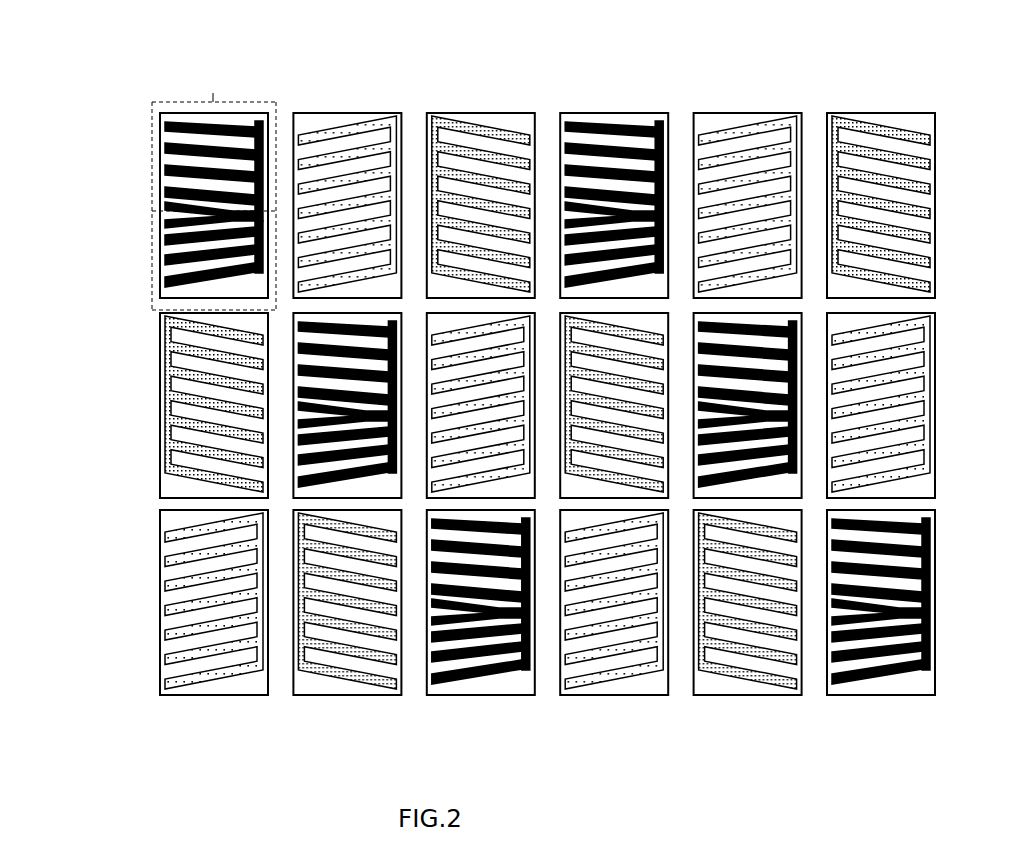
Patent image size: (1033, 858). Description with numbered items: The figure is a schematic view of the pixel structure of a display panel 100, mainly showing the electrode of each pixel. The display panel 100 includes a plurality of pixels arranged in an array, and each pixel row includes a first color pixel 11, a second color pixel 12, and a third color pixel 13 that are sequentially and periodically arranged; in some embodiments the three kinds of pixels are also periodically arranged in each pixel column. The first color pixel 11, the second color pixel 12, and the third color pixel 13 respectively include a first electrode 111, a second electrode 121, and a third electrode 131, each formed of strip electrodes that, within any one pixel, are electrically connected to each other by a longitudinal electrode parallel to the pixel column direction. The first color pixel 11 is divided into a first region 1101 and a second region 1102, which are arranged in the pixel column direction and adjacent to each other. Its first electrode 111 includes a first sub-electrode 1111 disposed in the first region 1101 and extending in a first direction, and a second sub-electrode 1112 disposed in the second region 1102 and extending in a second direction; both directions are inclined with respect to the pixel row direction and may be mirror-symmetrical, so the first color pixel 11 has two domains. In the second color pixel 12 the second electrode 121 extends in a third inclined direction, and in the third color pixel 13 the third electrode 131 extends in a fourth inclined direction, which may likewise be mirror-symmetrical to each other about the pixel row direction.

The display panel 100 is at (545, 766).
The first color pixel 11 is at (241, 112).
The first region 1101 is at (254, 102).
The second region 1102 is at (151, 290).
The first electrode 111 is at (150, 204).
The second sub-electrode 1112 is at (168, 146).
The first sub-electrode 1111 is at (168, 240).
The second color pixel 12 is at (349, 113).
The third color pixel 13 is at (450, 113).
The third electrode 131 is at (168, 393).
The second electrode 121 is at (168, 586).